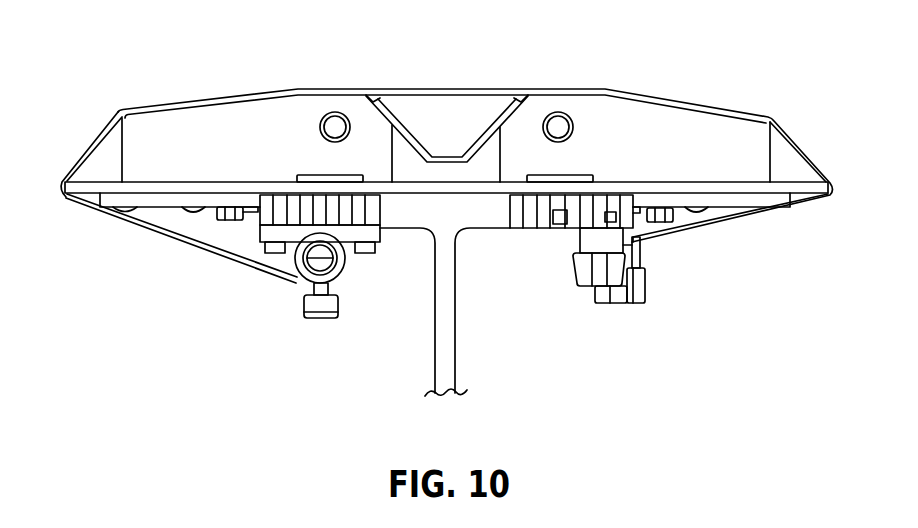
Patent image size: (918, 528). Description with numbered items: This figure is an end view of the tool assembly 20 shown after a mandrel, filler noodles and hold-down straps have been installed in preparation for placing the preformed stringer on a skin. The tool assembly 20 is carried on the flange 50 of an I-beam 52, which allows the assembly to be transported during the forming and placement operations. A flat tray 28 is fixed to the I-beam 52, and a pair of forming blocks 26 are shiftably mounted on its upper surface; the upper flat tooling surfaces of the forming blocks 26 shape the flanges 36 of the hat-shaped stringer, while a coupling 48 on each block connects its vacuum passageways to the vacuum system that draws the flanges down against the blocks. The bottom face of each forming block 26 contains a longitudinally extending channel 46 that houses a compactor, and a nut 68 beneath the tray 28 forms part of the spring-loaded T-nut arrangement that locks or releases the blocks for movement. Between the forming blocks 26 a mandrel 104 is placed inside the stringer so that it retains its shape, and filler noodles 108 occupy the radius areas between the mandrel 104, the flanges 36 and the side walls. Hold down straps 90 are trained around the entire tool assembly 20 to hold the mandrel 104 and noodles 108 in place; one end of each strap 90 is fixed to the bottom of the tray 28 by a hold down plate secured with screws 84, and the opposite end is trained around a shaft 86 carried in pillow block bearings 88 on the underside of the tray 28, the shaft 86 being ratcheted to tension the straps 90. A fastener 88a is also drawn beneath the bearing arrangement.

The tool assembly 20 is at (748, 87).
The forming block 26 is at (160, 133).
The tray 28 is at (62, 186).
The flanges 36 is at (318, 95).
The longitudinally extending channel 46 is at (298, 169).
The coupling 48 is at (333, 127).
The flange 50 is at (403, 213).
The I-beam 52 is at (443, 316).
The nut 68 is at (232, 214).
The screws 84 is at (640, 287).
The shaft 86 is at (320, 275).
The pillow block bearings 88 is at (303, 286).
The bolt 88a is at (315, 313).
The hold down straps 90 is at (88, 152).
The mandrel 104 is at (437, 124).
The filler noodles 108 is at (373, 92).